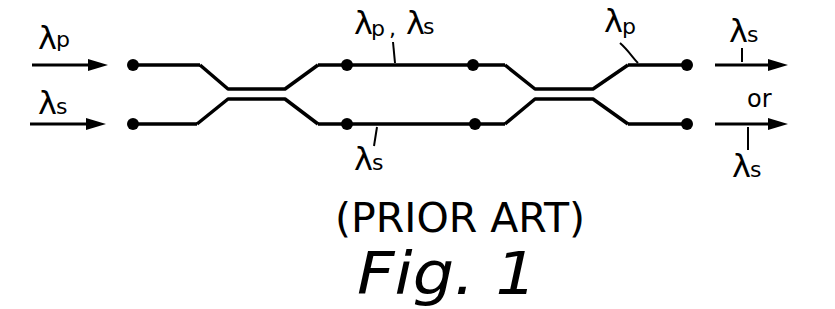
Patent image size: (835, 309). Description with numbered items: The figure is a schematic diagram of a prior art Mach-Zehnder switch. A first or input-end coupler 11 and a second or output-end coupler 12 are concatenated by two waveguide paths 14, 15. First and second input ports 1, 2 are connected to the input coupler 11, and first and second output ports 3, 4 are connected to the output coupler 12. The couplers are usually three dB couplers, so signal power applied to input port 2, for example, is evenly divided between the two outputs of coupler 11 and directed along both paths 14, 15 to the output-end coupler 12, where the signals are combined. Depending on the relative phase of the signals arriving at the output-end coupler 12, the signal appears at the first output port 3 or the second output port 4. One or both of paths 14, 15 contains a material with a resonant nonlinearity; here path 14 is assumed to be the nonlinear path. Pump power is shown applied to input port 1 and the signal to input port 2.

The first input port 1 is at (136, 60).
The second input port 2 is at (134, 130).
The first output port 3 is at (688, 58).
The second output port 4 is at (683, 132).
The input-end coupler 11 is at (254, 101).
The output-end coupler 12 is at (568, 102).
The waveguide path 14 is at (448, 63).
The waveguide path 15 is at (412, 127).